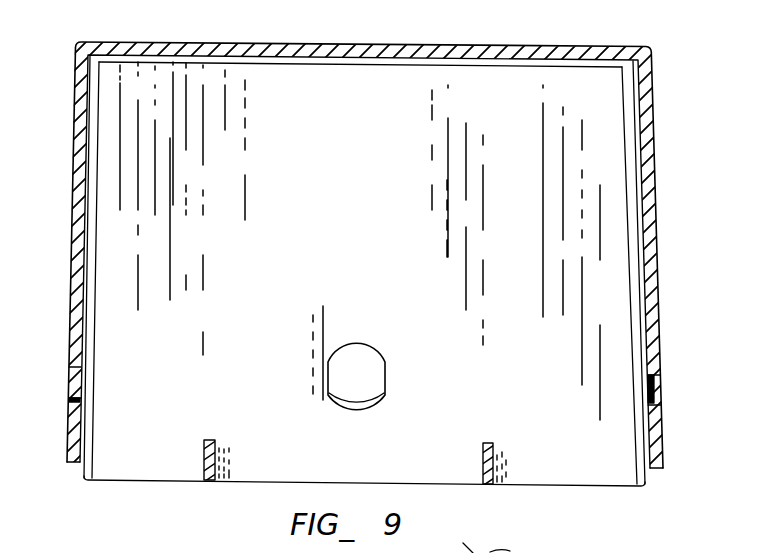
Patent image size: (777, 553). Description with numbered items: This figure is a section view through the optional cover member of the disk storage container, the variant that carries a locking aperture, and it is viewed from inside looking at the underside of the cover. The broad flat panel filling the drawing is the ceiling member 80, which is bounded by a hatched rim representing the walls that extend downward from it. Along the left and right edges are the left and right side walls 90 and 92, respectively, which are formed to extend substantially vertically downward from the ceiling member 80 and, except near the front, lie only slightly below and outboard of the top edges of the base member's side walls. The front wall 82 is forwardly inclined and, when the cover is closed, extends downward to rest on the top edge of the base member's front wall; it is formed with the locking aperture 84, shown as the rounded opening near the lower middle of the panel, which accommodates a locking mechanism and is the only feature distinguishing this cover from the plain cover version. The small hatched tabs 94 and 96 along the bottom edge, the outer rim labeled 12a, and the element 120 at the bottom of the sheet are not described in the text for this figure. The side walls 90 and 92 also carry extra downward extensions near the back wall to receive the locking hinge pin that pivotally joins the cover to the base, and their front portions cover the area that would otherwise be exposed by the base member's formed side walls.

The tray half / cover member 12a is at (583, 35).
The ceiling member 80 is at (365, 44).
The front wall 82 is at (617, 490).
The locking aperture 84 is at (378, 383).
The left side wall 90 is at (73, 215).
The right side wall 92 is at (655, 228).
The left locking tab 94 is at (203, 470).
The right locking tab 96 is at (482, 476).
The element 120 is at (541, 552).